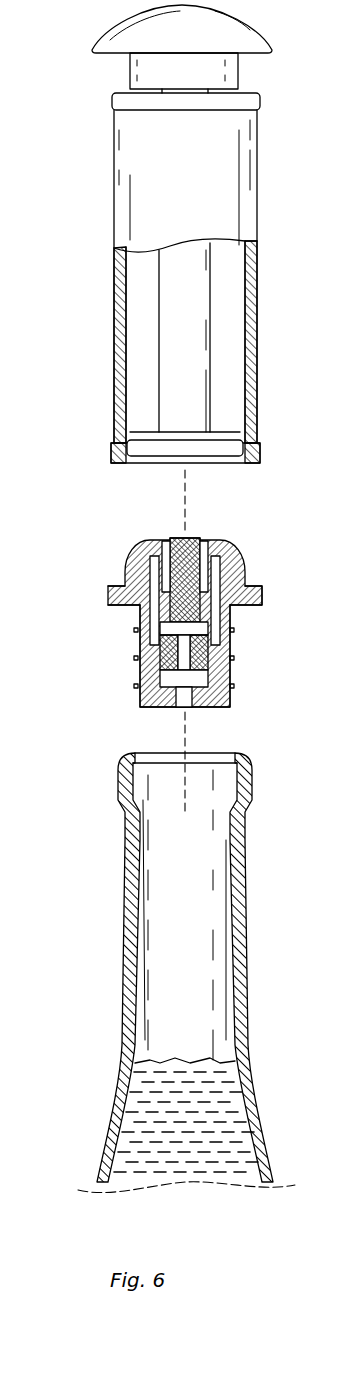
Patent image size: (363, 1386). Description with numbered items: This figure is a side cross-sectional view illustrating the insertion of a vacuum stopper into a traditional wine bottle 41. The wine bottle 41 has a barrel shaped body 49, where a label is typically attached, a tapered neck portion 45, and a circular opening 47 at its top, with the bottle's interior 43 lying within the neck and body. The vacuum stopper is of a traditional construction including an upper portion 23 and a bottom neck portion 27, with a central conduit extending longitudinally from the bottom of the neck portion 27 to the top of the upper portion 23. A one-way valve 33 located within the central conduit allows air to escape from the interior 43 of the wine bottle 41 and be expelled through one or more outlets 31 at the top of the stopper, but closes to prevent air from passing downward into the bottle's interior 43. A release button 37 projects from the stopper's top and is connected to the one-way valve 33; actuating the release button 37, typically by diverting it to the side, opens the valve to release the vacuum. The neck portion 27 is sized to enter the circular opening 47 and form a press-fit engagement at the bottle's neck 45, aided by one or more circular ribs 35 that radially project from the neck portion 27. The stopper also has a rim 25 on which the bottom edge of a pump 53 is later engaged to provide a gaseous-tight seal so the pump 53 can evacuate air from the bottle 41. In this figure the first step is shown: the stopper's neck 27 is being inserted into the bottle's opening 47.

The pump 53 is at (113, 388).
The upper portion 23 is at (189, 597).
The rim 25 is at (262, 598).
The neck portion 27 is at (196, 636).
The outlet 31 is at (222, 547).
The one-way valve 33 is at (230, 645).
The circular rib 35 is at (230, 688).
The release button 37 is at (170, 540).
The wine bottle 41 is at (189, 964).
The bottle interior 43 is at (173, 1035).
The tapered neck portion 45 is at (126, 930).
The circular opening 47 is at (152, 753).
The barrel shaped body 49 is at (160, 1133).